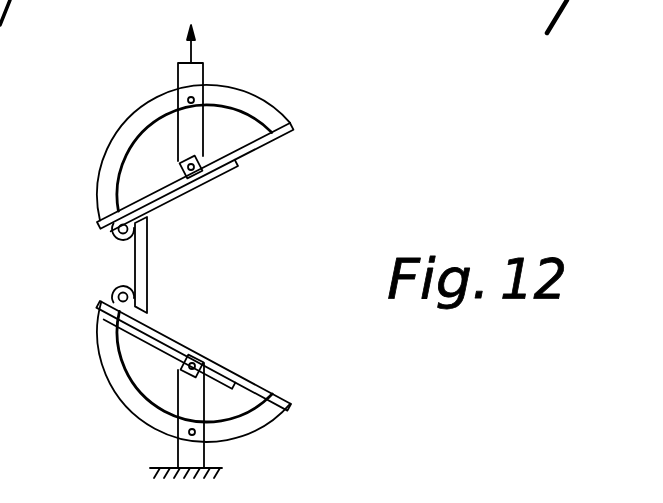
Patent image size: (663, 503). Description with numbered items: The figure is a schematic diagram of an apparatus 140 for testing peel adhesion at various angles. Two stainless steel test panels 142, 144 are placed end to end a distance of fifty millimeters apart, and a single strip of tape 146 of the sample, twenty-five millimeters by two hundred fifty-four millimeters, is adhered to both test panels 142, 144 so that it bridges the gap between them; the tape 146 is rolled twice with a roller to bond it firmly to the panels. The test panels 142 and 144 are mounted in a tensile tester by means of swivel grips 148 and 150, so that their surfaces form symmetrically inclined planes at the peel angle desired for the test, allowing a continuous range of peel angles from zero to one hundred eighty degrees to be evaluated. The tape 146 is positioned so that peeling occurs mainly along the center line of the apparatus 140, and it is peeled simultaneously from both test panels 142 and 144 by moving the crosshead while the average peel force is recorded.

The apparatus 140 is at (338, 215).
The test panel 142 is at (258, 146).
The test panel 144 is at (263, 387).
The strip of tape 146 is at (150, 257).
The swivel grip 148 is at (263, 107).
The swivel grip 150 is at (115, 372).